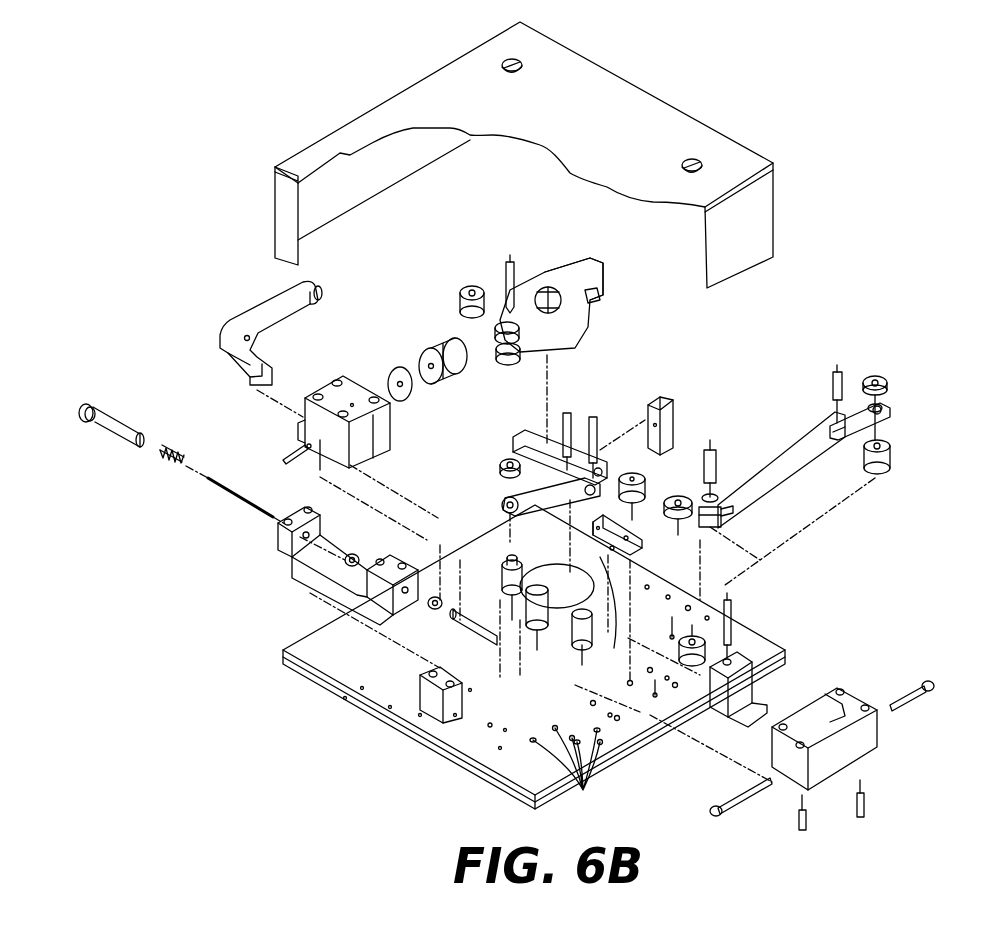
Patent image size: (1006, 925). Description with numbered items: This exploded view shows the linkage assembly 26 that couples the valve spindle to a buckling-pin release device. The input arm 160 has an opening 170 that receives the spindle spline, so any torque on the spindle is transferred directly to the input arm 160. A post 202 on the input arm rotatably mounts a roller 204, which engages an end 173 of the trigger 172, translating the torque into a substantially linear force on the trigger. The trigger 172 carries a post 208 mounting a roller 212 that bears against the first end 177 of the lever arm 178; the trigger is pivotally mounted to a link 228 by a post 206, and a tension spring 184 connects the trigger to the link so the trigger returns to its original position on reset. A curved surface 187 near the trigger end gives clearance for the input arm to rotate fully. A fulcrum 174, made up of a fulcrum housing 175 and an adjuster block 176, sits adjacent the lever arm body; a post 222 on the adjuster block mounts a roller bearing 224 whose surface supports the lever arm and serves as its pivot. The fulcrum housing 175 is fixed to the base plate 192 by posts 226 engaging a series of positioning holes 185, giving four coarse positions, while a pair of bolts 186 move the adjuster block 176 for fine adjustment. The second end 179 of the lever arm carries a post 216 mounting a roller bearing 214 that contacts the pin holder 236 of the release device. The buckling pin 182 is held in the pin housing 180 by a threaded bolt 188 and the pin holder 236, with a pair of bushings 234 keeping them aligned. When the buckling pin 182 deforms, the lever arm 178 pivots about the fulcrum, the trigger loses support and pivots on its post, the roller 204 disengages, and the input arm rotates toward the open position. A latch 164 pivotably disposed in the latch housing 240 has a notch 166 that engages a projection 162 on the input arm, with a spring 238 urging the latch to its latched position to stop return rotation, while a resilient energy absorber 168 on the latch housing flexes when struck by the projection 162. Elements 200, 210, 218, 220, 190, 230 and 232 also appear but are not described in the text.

The linkage assembly 26 is at (818, 176).
The cover 200 is at (398, 103).
The latch 164 is at (238, 330).
The notch 166 is at (322, 293).
The energy absorber 168 is at (438, 350).
The latch housing 240 is at (335, 392).
The spring 238 is at (282, 460).
The post 202 is at (505, 262).
The roller 204 is at (460, 290).
The input arm 160 is at (525, 288).
The projection 162 is at (595, 265).
The opening 170 is at (600, 300).
The trigger 172 is at (550, 440).
The curved surface 187 is at (545, 440).
The end 173 is at (512, 442).
The link 228 is at (503, 505).
The post 206 is at (572, 425).
The post 208 is at (597, 440).
The bracket 210 is at (675, 405).
The roller 212 is at (645, 492).
The post 216 is at (717, 468).
The roller bearing 214 is at (680, 522).
The second end 179 is at (722, 525).
The lever arm 178 is at (780, 480).
The first end 177 is at (822, 426).
The pin 218 is at (833, 395).
The roller 220 is at (890, 460).
The threaded bolt 188 is at (90, 403).
The spring 190 is at (170, 448).
The buckling pin 182 is at (242, 497).
The pin housing 180 is at (280, 555).
The bushings 234 is at (430, 607).
The pin holder 236 is at (470, 622).
The base plate 192 is at (325, 656).
The tension spring 184 is at (548, 575).
The cylinder 230 is at (540, 632).
The block 232 is at (432, 708).
The positioning holes 185 is at (566, 776).
The roller bearing 224 is at (692, 635).
The post 222 is at (735, 615).
The fulcrum 174 is at (882, 655).
The adjuster block 176 is at (752, 683).
The fulcrum housing 175 is at (858, 745).
The bolts 186 is at (920, 700).
The posts 226 is at (862, 818).